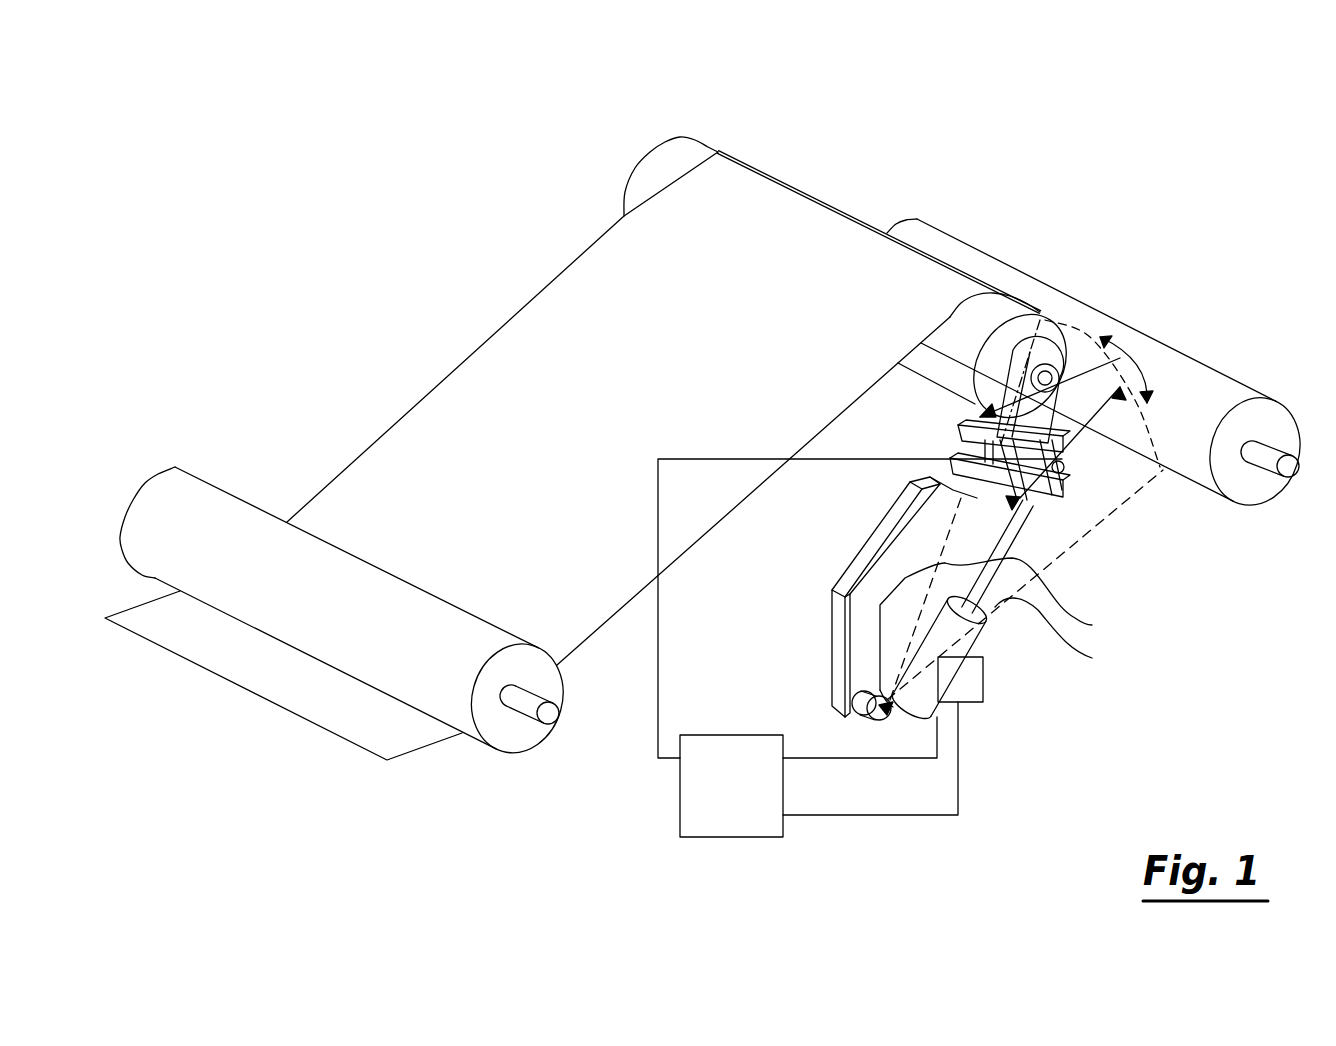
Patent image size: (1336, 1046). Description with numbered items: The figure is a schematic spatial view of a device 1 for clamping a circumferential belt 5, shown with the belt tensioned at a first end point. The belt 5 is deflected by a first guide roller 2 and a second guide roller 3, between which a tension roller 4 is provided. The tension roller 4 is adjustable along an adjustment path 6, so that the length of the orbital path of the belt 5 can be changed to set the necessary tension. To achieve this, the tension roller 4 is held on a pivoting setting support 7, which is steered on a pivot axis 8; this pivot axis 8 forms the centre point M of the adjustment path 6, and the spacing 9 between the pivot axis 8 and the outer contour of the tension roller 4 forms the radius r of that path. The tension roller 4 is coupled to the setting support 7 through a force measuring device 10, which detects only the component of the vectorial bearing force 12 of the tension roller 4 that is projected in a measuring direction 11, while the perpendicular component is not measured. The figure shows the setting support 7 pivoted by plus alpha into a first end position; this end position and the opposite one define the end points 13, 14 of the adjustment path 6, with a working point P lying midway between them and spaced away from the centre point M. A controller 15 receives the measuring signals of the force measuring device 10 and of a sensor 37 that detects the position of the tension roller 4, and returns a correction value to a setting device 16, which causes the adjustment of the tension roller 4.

The device 1 is at (478, 200).
The first guide roller 2 is at (493, 713).
The second guide roller 3 is at (913, 233).
The tension roller 4 is at (643, 185).
The circumferential belt 5 is at (503, 343).
The adjustment path 6 is at (1108, 330).
The setting support 7 is at (837, 683).
The pivot axis 8 is at (863, 707).
The spacing 9 is at (993, 588).
The force measuring device 10 is at (963, 490).
The measuring direction 11 is at (1020, 400).
The bearing force 12 is at (1048, 415).
The end point 13 is at (1047, 327).
The end point 14 is at (1157, 478).
The controller 15 is at (692, 790).
The setting device 16 is at (983, 652).
The sensor 37 is at (968, 682).
The centre point M is at (890, 720).
The working point P is at (1125, 360).
The radius r is at (920, 597).